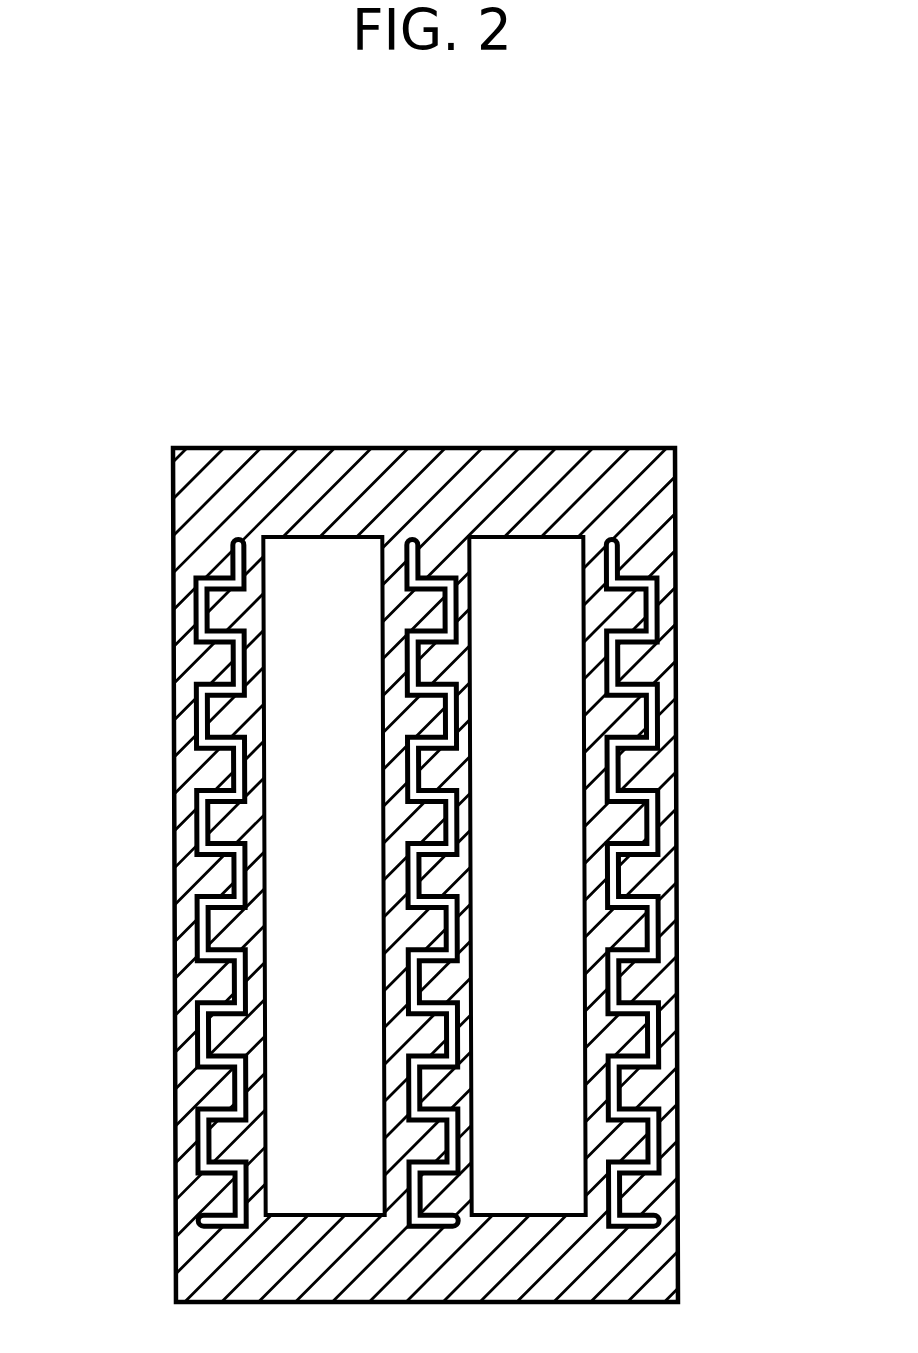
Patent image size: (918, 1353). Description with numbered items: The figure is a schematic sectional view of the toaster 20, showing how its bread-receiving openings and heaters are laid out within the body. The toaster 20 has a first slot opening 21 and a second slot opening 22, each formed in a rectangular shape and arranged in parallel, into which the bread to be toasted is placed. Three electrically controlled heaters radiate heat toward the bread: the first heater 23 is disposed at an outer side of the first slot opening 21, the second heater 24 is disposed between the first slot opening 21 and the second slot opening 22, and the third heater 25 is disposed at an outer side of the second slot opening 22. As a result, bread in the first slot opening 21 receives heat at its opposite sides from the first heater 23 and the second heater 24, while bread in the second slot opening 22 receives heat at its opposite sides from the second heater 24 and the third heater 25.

The toaster 20 is at (453, 293).
The first slot opening 21 is at (305, 1100).
The second slot opening 22 is at (550, 1100).
The first heater 23 is at (222, 572).
The second heater 24 is at (411, 537).
The third heater 25 is at (623, 572).